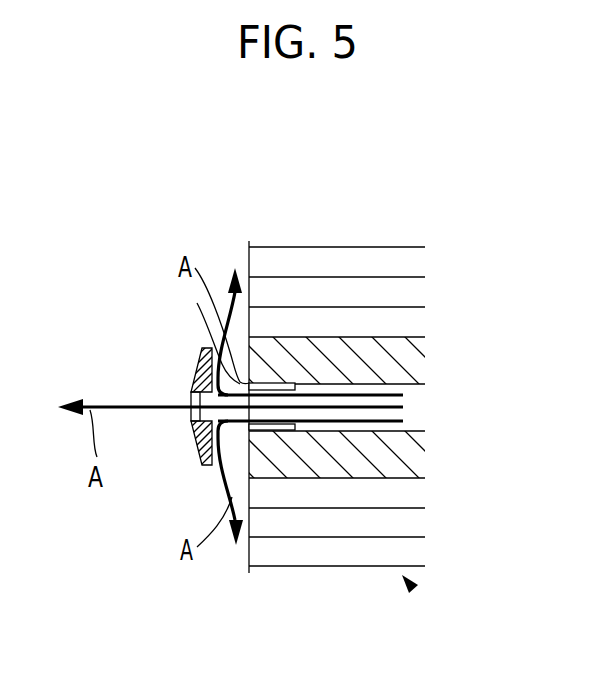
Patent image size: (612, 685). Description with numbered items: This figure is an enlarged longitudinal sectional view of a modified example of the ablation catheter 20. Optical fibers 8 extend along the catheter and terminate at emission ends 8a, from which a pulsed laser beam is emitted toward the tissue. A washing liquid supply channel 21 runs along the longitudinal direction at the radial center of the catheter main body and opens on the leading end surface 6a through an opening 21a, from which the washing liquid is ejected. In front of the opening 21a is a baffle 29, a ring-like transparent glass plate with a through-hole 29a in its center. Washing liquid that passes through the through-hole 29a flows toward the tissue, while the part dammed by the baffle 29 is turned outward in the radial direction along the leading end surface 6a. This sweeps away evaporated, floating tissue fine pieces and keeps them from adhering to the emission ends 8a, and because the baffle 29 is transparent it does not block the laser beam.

The optical fiber 8 is at (328, 247).
The emission end 8a is at (248, 262).
The leading end surface 6a is at (248, 460).
The washing liquid supply channel 21 is at (415, 384).
The opening 21a is at (199, 326).
The baffle 29 is at (200, 352).
The through-hole 29a is at (190, 402).
The ablation catheter 20 is at (413, 589).